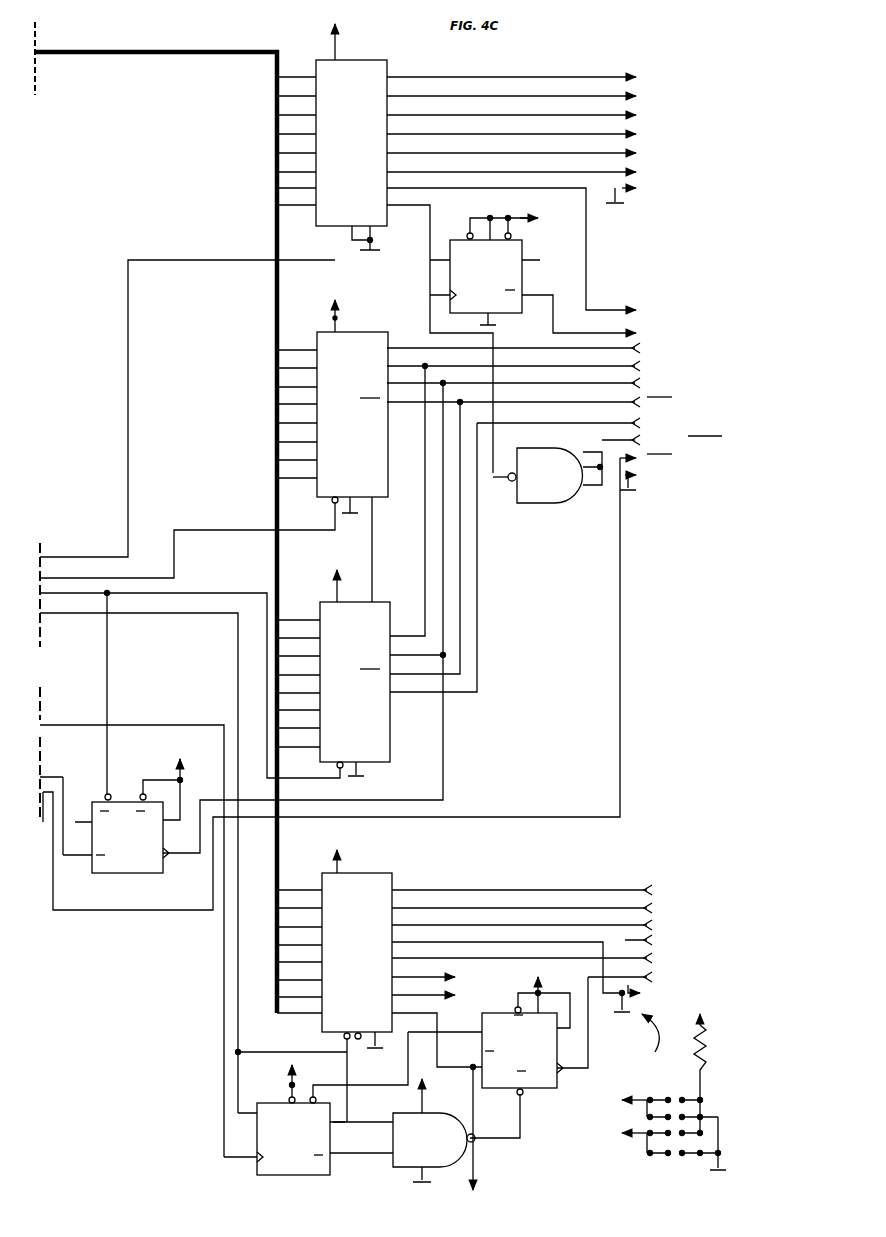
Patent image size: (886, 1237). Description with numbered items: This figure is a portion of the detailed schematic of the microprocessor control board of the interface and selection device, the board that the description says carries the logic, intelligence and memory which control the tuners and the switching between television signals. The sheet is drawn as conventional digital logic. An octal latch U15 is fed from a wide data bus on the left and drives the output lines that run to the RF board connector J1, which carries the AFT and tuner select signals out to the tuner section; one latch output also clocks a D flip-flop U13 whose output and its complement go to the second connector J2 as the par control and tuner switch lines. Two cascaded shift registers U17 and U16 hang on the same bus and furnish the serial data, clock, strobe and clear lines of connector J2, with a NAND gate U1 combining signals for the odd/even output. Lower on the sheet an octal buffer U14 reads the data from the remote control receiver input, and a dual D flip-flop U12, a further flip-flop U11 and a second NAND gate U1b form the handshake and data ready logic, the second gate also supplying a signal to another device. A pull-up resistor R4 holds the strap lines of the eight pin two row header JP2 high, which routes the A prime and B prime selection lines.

The octal D latch U15 is at (342, 128).
The D flip-flop U13 is at (511, 339).
The shift register U17 is at (223, 431).
The shift register U16 is at (258, 575).
The octal buffer U14 is at (486, 1013).
The dual D flip-flop U12 is at (406, 1069).
The D flip-flop U11 is at (330, 807).
The NAND gate U1 is at (548, 475).
The NAND gate U1b is at (439, 1127).
The resistor 4.7K R4 is at (719, 1070).
The RF board connector, 7 pins J1 is at (547, 172).
The connector, 10 pins J2 is at (567, 406).
The 8 pin 2 row header JP2 is at (671, 1108).